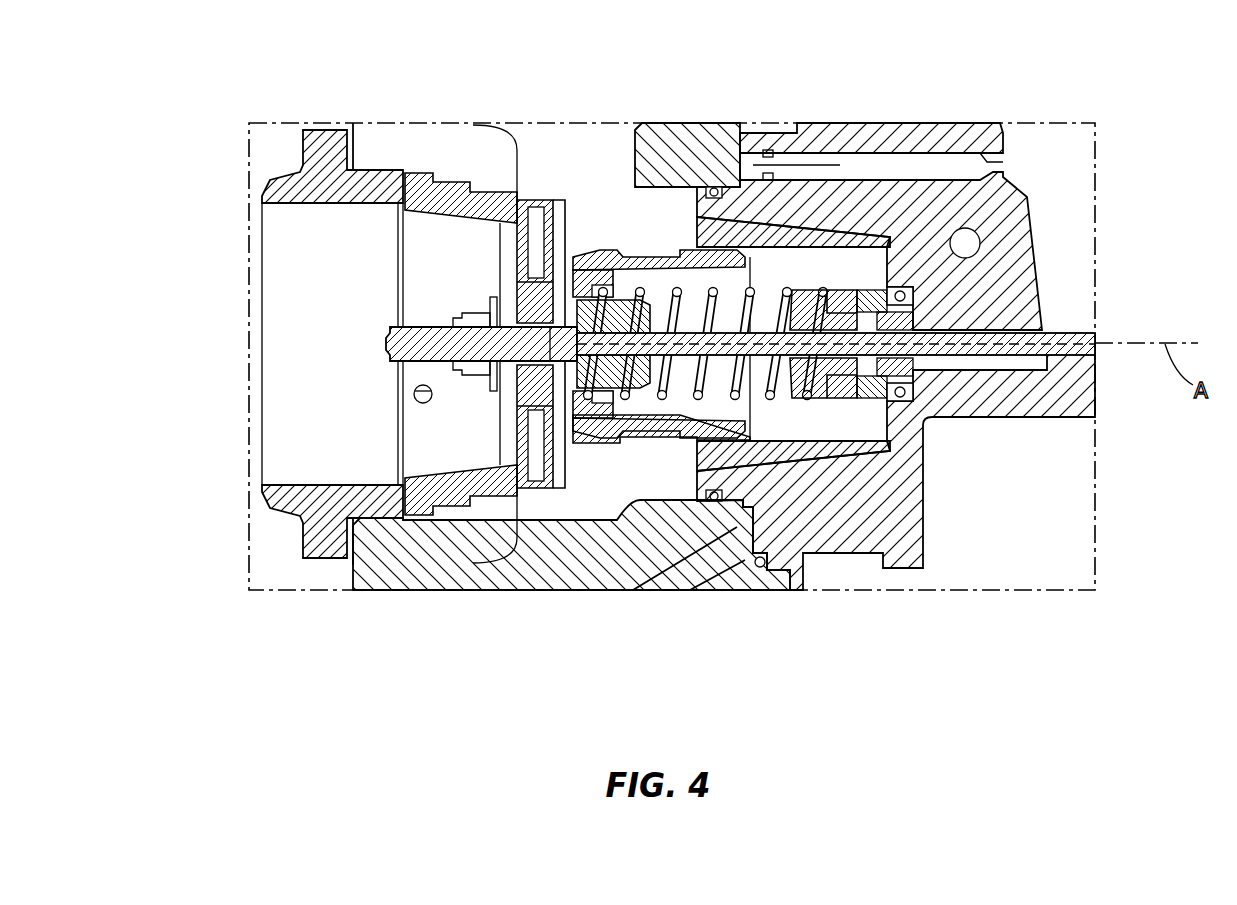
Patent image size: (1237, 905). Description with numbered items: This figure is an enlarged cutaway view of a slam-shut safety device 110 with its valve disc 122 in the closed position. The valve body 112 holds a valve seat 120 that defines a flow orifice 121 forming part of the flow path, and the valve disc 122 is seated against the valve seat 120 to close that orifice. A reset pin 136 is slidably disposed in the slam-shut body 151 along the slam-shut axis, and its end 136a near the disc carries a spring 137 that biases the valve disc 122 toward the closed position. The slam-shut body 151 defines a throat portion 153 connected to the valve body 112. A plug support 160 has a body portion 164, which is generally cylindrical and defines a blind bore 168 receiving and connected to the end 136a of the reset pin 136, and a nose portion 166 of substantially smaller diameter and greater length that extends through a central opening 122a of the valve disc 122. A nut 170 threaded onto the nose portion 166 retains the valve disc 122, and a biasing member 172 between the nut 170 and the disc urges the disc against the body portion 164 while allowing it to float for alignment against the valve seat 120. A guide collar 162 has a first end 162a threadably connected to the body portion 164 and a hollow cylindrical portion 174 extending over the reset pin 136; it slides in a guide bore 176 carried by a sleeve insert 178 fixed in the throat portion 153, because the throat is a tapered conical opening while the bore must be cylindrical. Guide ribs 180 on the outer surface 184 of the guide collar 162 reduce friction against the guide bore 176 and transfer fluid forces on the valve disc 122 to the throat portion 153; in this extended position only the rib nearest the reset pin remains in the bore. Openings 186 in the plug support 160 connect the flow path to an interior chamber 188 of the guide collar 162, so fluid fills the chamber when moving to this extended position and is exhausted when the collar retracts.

The slam-shut safety device 110 is at (1070, 158).
The valve body 112 is at (366, 137).
The valve seat 120 is at (485, 210).
The flow orifice 121 is at (418, 436).
The valve disc 122 is at (533, 200).
The central opening 122a is at (563, 200).
The reset pin 136 is at (1063, 333).
The end of the reset pin 136a is at (617, 430).
The spring 137 is at (802, 288).
The slam-shut body 151 is at (917, 498).
The throat portion 153 is at (820, 446).
The plug support 160 is at (481, 345).
The guide collar 162 is at (654, 432).
The first end of the guide collar 162a is at (587, 435).
The body portion 164 is at (628, 250).
The nose portion 166 is at (427, 330).
The blind bore 168 is at (707, 183).
The nut 170 is at (465, 362).
The biasing member 172 is at (491, 373).
The hollow cylindrical portion 174 is at (735, 178).
The guide bore 176 is at (877, 262).
The sleeve insert 178 is at (838, 470).
The guide ribs 180 is at (700, 515).
The outer surface 184 is at (626, 252).
The openings 186 is at (578, 290).
The interior chamber 188 is at (720, 404).